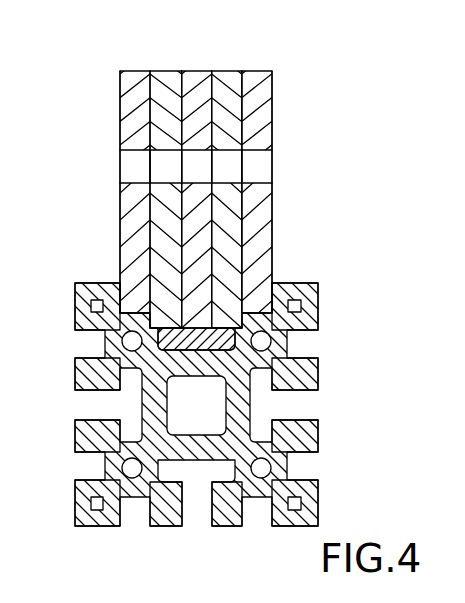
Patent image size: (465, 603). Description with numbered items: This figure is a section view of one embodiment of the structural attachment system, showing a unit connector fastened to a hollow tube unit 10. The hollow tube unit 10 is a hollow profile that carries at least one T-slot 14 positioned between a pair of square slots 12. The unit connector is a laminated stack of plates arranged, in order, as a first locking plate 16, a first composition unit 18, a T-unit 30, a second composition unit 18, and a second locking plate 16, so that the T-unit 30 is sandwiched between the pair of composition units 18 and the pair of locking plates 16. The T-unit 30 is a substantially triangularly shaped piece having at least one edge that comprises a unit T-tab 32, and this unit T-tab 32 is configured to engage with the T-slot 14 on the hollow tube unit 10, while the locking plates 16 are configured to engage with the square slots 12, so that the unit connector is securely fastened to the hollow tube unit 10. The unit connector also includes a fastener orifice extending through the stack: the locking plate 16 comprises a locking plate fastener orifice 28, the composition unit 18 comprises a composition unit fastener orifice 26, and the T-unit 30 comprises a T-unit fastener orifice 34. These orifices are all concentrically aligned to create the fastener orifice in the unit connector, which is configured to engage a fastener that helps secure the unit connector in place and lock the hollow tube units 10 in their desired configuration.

The hollow tube unit 10 is at (313, 284).
The square slots 12 is at (87, 332).
The T-slot 14 is at (73, 416).
The locking plate 16 is at (131, 74).
The composition unit 18 is at (167, 74).
The composition unit fastener orifice 26 is at (233, 184).
The locking plate fastener orifice 28 is at (253, 152).
The T-unit 30 is at (195, 74).
The unit T-tab 32 is at (213, 345).
The T-unit fastener orifice 34 is at (192, 152).